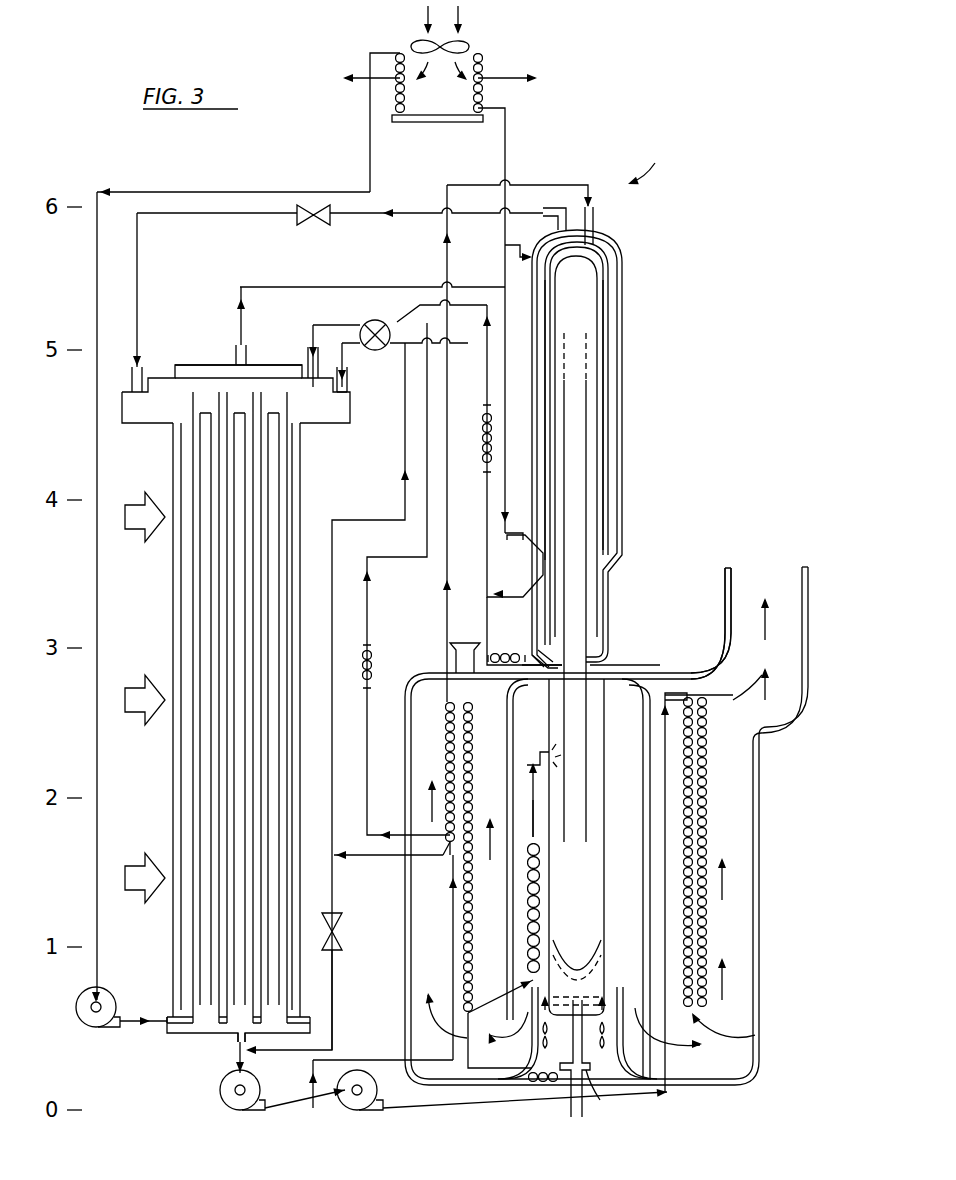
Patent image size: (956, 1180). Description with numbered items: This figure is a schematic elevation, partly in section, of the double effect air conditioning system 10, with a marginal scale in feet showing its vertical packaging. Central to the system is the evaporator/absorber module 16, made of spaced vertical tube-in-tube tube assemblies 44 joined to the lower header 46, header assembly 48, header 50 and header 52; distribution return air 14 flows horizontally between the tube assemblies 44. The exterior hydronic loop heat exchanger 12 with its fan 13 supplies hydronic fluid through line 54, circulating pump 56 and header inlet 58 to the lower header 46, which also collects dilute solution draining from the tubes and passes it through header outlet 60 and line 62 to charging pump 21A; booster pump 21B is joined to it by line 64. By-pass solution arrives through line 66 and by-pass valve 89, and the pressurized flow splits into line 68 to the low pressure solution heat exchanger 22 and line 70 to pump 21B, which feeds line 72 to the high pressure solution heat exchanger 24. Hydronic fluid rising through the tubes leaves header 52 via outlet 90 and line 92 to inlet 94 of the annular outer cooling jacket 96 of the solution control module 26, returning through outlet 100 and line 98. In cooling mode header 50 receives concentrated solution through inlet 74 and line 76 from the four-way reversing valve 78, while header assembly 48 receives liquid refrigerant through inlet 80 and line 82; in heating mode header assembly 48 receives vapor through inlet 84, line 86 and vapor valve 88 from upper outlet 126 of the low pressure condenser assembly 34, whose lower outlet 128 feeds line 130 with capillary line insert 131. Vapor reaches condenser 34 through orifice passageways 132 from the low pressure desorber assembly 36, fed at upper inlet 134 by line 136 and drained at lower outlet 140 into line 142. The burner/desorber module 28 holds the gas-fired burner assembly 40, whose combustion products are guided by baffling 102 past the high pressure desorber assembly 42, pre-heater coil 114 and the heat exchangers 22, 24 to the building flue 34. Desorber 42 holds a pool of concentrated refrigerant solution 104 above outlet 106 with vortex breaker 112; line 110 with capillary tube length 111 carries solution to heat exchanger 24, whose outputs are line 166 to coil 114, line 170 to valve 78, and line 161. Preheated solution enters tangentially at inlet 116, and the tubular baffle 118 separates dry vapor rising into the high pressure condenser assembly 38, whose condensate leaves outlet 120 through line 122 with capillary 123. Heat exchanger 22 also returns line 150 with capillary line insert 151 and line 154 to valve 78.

The double effect air conditioning system 10 is at (651, 164).
The hydronic loop heat exchanger 12 is at (490, 60).
The fan 13 is at (465, 42).
The distribution return air 14 is at (135, 697).
The evaporator/absorber module 16 is at (170, 805).
The charging pump 21A is at (222, 1100).
The booster pump 21B is at (360, 1110).
The low pressure solution heat exchanger 22 is at (448, 745).
The high pressure solution heat exchanger 24 is at (468, 968).
The solution control module 26 is at (626, 352).
The burner/desorber module 28 is at (605, 740).
The low pressure condenser assembly 34 is at (552, 236).
The low pressure desorber assembly 36 is at (608, 252).
The high pressure condenser assembly 38 is at (585, 297).
The gas-fired burner assembly 40 is at (588, 1053).
The high pressure desorber assembly 42 is at (586, 903).
The tube-in-tube tube assemblies 44 is at (255, 566).
The lower header 46 is at (167, 1010).
The header assembly 48 is at (326, 423).
The header 50 is at (345, 392).
The header 52 is at (203, 365).
The line 54 is at (226, 192).
The circulating pump 56 is at (90, 1028).
The header inlet 58 is at (152, 1028).
The header outlet 60 is at (236, 1040).
The line 62 is at (245, 1075).
The line 64 is at (285, 1110).
The line 66 is at (333, 988).
The line 68 is at (390, 1060).
The line 70 is at (322, 1102).
The line 72 is at (490, 1103).
The inlet 74 is at (308, 352).
The line 76 is at (330, 325).
The 4-way reversing valve 78 is at (383, 320).
The inlet 80 is at (342, 372).
The line 82 is at (348, 348).
The inlet 84 is at (142, 370).
The line 86 is at (232, 213).
The vapor valve 88 is at (313, 225).
The by-pass valve 89 is at (342, 932).
The outlet 90 is at (246, 345).
The line 92 is at (368, 287).
The inlet 94 is at (504, 545).
The annular outer cooling jacket 96 is at (530, 332).
The line 98 is at (505, 150).
The outlet 100 is at (505, 245).
The baffling 102 is at (426, 673).
The pool of concentrated refrigerant solution 104 is at (577, 957).
The outlet 106 is at (571, 1105).
The line 110 is at (480, 1068).
The capillary tube length 111 is at (530, 1080).
The vortex breaker 112 is at (600, 1100).
The pre-heater coil 114 is at (527, 875).
The inlet 116 is at (545, 752).
The tubular baffle 118 is at (592, 465).
The outlet 120 is at (592, 666).
The line 122 is at (488, 652).
The capillary 123 is at (509, 647).
The upper outlet 126 is at (560, 185).
The lower outlet 128 is at (512, 566).
The line 130 is at (452, 306).
The capillary line insert 131 is at (490, 445).
The orifice passageways 132 is at (545, 285).
The upper inlet 134 is at (596, 222).
The line 136 is at (447, 264).
The lower outlet 140 is at (544, 640).
The line 142 is at (456, 643).
The line 150 is at (370, 591).
The capillary line insert 151 is at (368, 666).
The line 154 is at (368, 520).
The line 161 is at (533, 800).
The line 166 is at (486, 990).
The line 170 is at (487, 330).